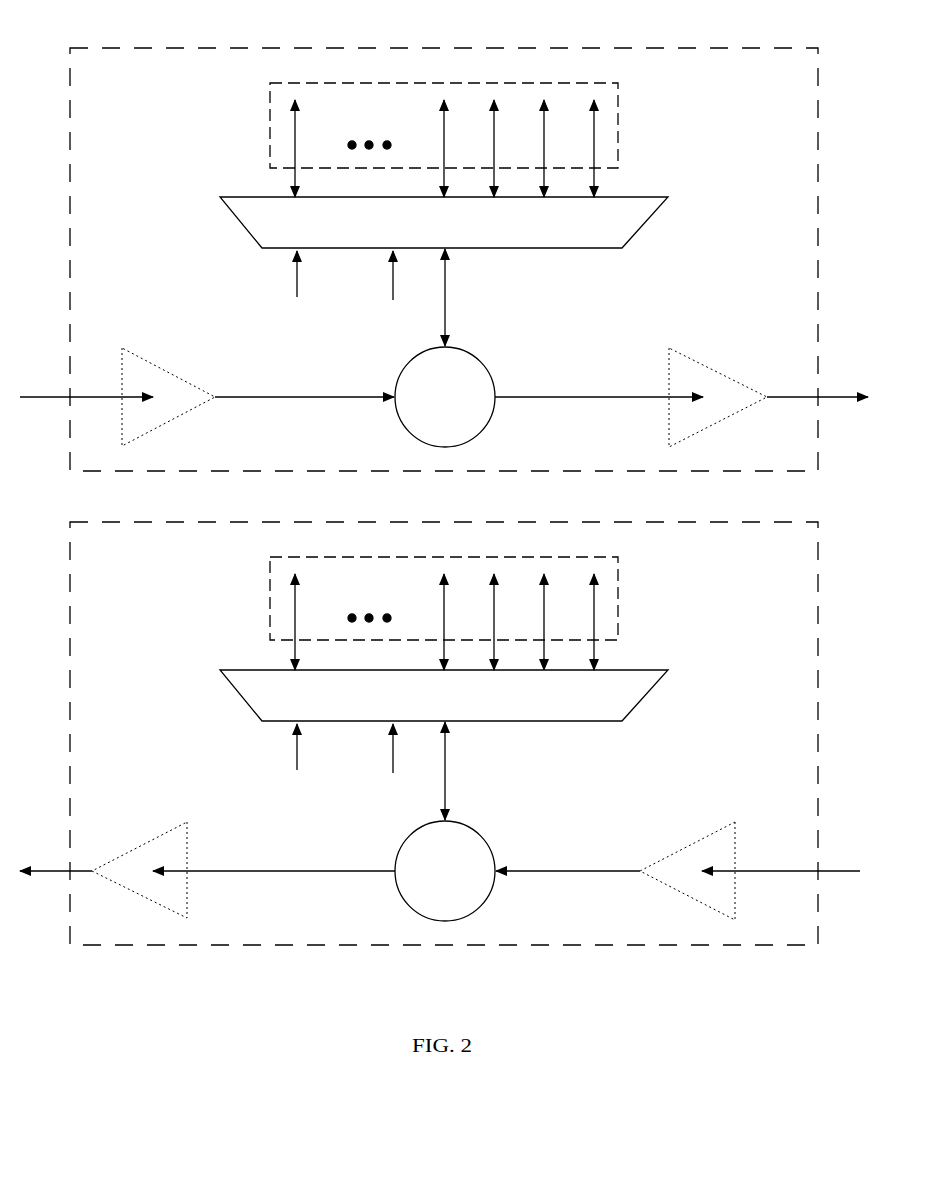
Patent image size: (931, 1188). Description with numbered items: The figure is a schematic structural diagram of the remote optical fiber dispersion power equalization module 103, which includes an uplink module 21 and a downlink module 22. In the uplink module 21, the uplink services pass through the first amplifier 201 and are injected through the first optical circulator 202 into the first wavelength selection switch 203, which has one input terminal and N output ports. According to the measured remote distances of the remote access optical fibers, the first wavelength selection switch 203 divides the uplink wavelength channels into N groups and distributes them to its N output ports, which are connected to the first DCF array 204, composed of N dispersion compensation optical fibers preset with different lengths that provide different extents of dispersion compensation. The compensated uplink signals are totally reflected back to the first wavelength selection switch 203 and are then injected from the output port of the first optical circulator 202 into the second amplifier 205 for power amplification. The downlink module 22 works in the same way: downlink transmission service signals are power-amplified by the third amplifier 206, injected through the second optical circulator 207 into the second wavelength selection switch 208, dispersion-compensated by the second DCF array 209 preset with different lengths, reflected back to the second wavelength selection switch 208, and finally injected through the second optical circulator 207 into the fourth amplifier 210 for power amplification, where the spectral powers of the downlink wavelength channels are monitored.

The remote optical fiber dispersion power equalization module 103 is at (444, 483).
The uplink module 21 is at (444, 259).
The downlink module 22 is at (440, 733).
The first amplifier 201 is at (207, 371).
The first optical circulator 202 is at (445, 348).
The first 1×N wavelength selection switch 203 is at (444, 222).
The first DCF array 204 is at (444, 126).
The second amplifier 205 is at (681, 385).
The third amplifier 206 is at (678, 855).
The second optical circulator 207 is at (445, 821).
The second 1×N wavelength selection switch 208 is at (444, 695).
The second DCF array 209 is at (444, 600).
The fourth amplifier 210 is at (207, 843).